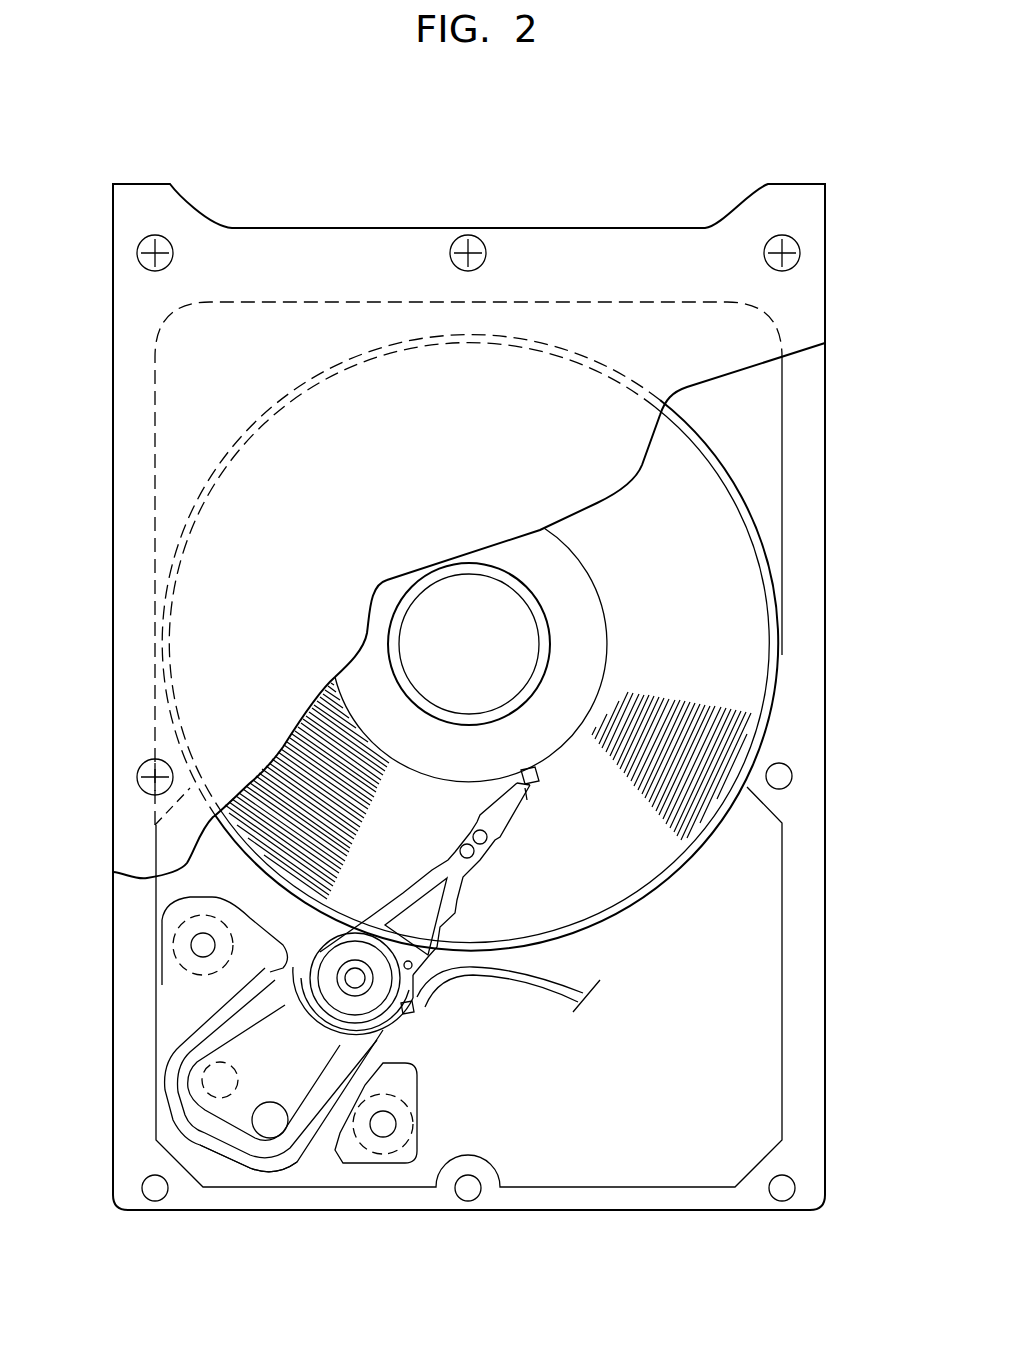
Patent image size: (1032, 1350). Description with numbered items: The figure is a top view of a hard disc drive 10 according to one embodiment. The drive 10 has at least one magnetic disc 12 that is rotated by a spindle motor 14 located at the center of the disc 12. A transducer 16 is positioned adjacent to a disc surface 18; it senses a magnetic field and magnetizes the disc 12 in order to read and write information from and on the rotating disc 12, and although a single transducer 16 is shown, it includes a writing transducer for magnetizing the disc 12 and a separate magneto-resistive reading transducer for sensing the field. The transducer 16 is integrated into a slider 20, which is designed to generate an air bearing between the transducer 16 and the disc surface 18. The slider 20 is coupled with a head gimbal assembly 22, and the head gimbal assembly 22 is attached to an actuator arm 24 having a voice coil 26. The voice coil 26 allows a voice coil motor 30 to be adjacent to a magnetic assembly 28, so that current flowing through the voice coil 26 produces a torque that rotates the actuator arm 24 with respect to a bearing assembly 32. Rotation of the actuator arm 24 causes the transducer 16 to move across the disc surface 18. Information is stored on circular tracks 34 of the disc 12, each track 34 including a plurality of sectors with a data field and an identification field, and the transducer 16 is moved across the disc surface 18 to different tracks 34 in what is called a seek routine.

The drive 10 is at (655, 162).
The magnetic disc 12 is at (733, 580).
The spindle motor 14 is at (440, 620).
The transducer 16 is at (548, 774).
The disc surface 18 is at (702, 644).
The slider 20 is at (526, 796).
The head gimbal assembly 22 is at (472, 883).
The actuator arm 24 is at (268, 1002).
The voice coil 26 is at (190, 1072).
The magnetic assembly 28 is at (200, 1015).
The voice coil motor 30 is at (310, 1150).
The bearing assembly 32 is at (372, 990).
The track 34 is at (317, 767).